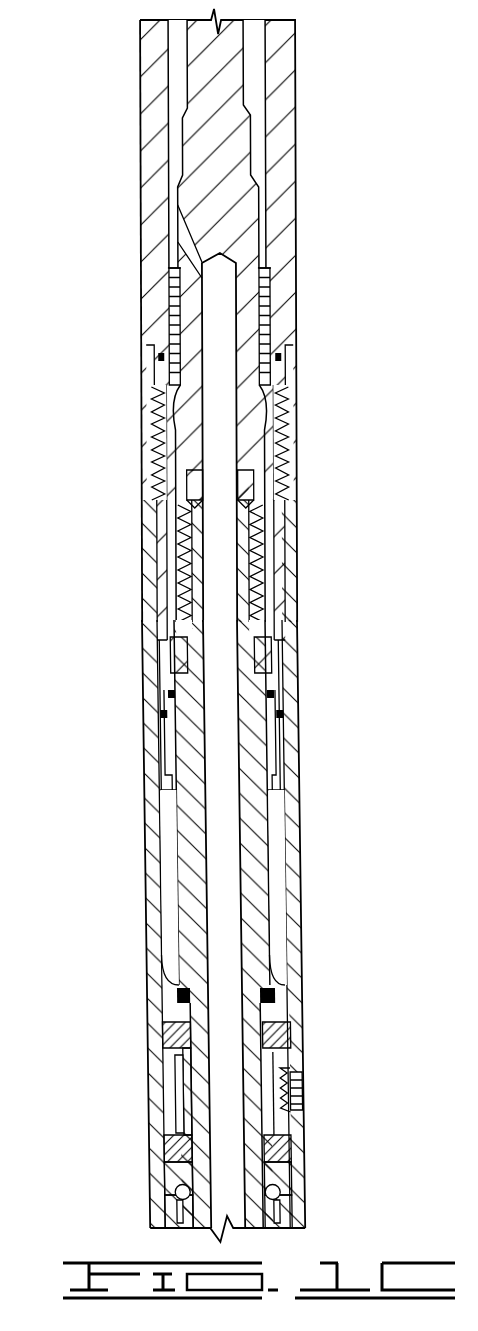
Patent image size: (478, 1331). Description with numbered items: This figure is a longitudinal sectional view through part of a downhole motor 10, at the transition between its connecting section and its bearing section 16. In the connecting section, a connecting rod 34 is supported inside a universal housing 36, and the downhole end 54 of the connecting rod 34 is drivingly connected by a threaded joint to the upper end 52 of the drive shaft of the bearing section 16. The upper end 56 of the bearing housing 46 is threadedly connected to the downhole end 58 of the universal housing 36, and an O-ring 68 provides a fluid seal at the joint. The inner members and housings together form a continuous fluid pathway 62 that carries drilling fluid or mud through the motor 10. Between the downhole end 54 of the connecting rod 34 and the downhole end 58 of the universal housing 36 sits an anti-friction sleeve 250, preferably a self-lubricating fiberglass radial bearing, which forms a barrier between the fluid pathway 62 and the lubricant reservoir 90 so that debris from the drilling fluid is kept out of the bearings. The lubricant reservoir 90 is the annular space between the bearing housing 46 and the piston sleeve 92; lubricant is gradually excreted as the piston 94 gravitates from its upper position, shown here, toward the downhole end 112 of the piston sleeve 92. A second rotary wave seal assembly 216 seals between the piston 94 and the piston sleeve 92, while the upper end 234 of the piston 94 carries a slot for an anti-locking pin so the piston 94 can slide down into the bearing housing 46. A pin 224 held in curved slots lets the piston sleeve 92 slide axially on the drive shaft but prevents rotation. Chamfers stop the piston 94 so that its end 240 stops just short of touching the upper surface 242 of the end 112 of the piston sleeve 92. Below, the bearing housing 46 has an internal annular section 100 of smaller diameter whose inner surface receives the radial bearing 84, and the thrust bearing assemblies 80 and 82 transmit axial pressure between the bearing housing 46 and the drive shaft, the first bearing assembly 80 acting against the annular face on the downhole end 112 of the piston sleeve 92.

The downhole motor 10 is at (116, 122).
The bearing section 16 is at (143, 1047).
The connecting rod 34 is at (232, 148).
The universal housing 36 is at (273, 78).
The bearing housing 46 is at (134, 534).
The upper end of the drive shaft 52 is at (250, 518).
The downhole end of the connecting rod 54 is at (243, 448).
The upper end of the bearing housing 56 is at (152, 368).
The downhole end of the universal housing 58 is at (153, 418).
The fluid pathway 62 is at (177, 72).
The O-ring 68 is at (283, 352).
The thrust bearing assembly 80 is at (298, 1025).
The thrust bearing assembly 82 is at (300, 1144).
The radial bearing 84 is at (183, 1072).
The lubricant reservoir 90 is at (277, 905).
The piston sleeve 92 is at (165, 868).
The piston 94 is at (165, 672).
The internal annular section 100 is at (288, 1066).
The downhole end of the piston sleeve 112 is at (278, 982).
The second rotary wave seal assembly 216 is at (163, 766).
The pin 224 is at (267, 684).
The upper end of the piston 234 is at (280, 507).
The end of the piston 240 is at (282, 792).
The upper surface of the piston sleeve 242 is at (170, 982).
The anti-friction sleeve 250 is at (175, 292).